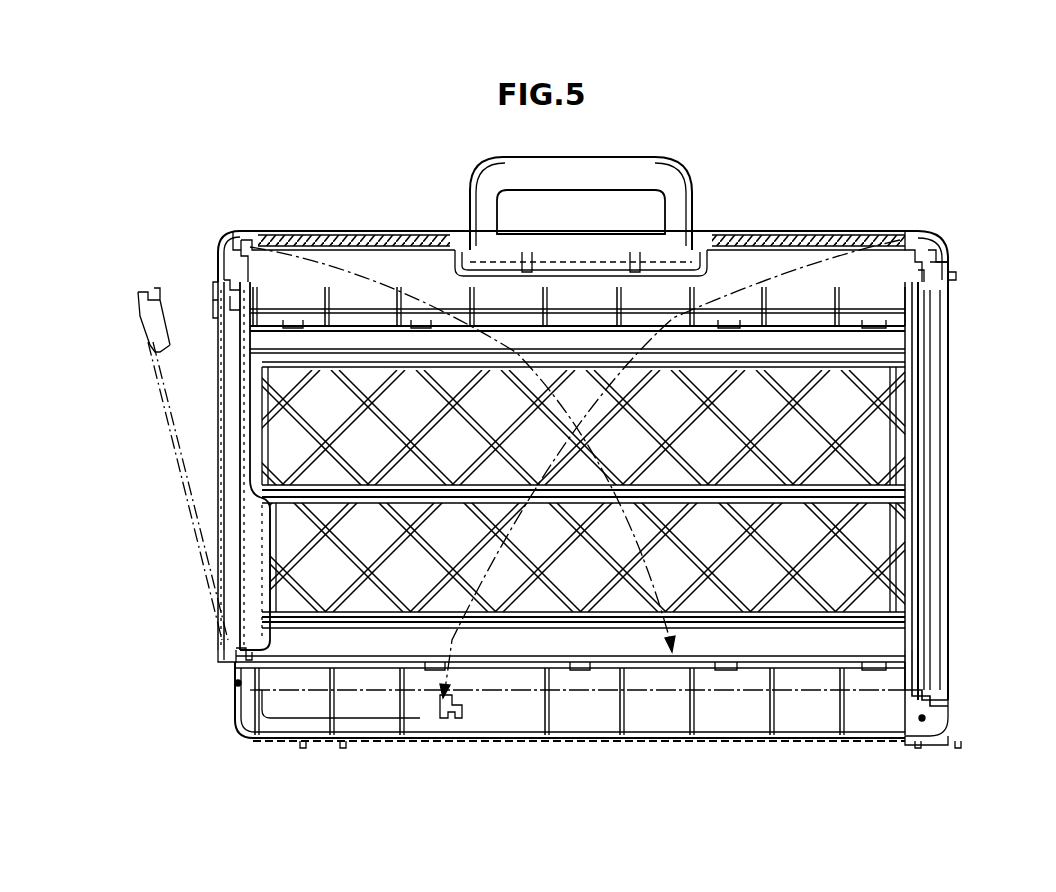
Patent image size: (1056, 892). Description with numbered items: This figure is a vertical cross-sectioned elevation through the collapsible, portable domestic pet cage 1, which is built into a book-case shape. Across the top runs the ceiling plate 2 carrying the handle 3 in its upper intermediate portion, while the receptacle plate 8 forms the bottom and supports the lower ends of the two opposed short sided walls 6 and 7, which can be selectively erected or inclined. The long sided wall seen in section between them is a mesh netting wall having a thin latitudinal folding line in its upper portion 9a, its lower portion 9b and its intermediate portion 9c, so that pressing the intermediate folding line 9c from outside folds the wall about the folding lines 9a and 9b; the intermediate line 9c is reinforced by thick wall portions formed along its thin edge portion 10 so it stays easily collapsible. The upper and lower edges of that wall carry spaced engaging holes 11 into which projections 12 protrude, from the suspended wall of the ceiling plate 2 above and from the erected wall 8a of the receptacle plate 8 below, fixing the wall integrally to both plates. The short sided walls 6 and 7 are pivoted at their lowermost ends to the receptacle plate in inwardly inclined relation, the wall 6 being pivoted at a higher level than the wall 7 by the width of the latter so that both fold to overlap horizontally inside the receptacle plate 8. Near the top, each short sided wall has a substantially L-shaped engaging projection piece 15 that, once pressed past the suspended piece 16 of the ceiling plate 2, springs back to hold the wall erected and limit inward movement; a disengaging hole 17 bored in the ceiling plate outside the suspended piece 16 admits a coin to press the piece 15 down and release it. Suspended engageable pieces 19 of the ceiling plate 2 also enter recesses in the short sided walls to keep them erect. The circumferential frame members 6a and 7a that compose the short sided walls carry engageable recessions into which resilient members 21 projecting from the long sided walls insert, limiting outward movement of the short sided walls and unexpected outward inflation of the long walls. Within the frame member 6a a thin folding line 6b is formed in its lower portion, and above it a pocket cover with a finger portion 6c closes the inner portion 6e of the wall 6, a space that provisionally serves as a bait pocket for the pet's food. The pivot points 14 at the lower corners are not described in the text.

The collapsible portable domestic pet cage 1 is at (744, 182).
The ceiling plate 2 is at (838, 218).
The handle 3 is at (655, 196).
The short sided wall 6 is at (205, 490).
The circumferential frame member 6a is at (213, 265).
The thin folding line 6b is at (218, 582).
The finger portion 6c is at (213, 302).
The inner portion of short sided wall 6e is at (248, 534).
The short sided wall 7 is at (962, 377).
The circumferential frame member 7a is at (953, 266).
The receptacle plate 8 is at (500, 755).
The erected wall of receptacle plate 8a is at (950, 640).
The upper folding line 9a is at (880, 322).
The lower folding line 9b is at (875, 630).
The intermediate folding line 9c is at (893, 490).
The thin edge portion 10 is at (903, 507).
The engaging holes 11 is at (420, 314).
The projections 12 is at (873, 318).
The pivot pin 14 is at (237, 685).
The engaging projection piece 15 is at (224, 236).
The suspended piece 16 is at (250, 240).
The disengaging hole 17 is at (236, 228).
The suspended engageable piece 19 is at (918, 236).
The resilient member 21 is at (216, 366).